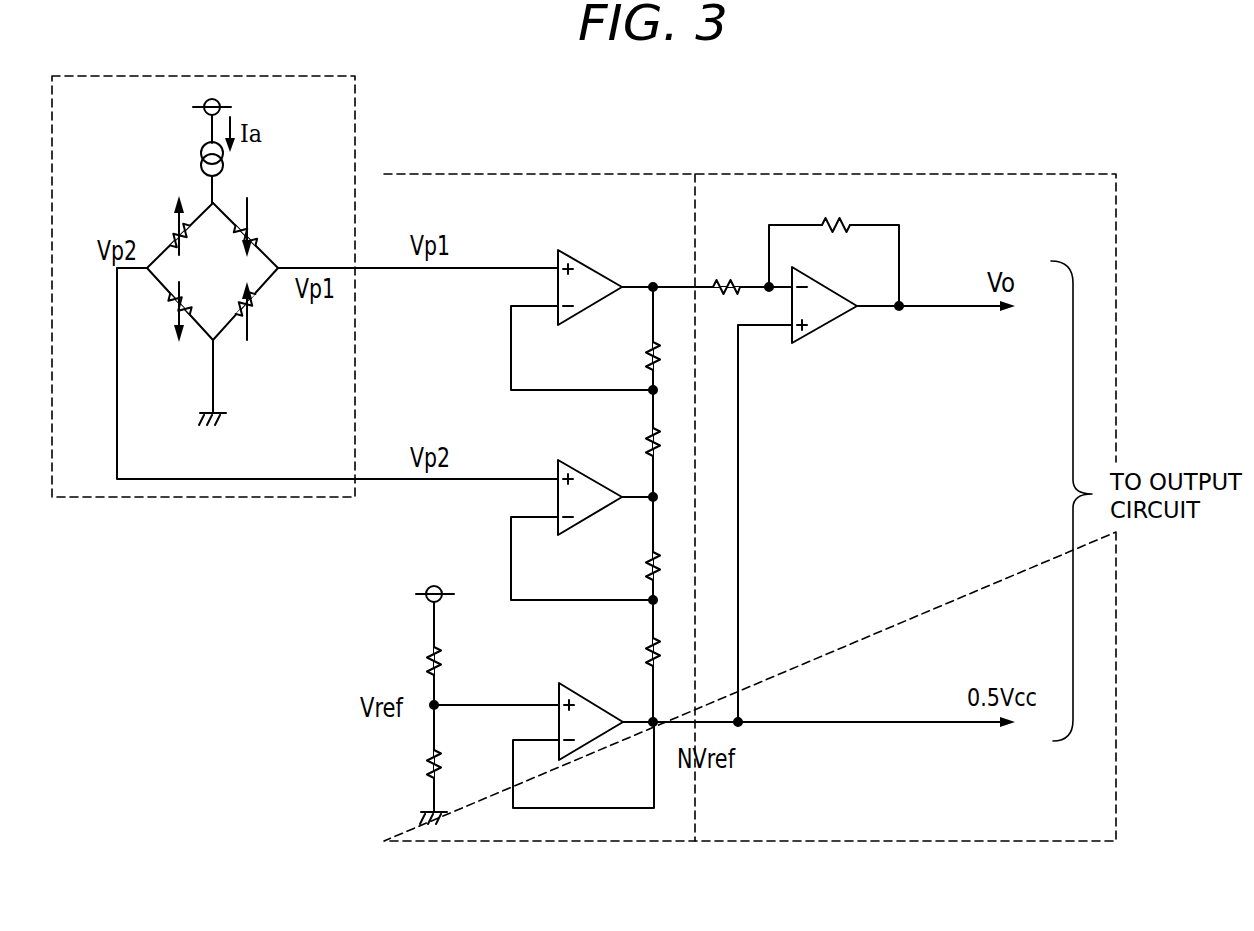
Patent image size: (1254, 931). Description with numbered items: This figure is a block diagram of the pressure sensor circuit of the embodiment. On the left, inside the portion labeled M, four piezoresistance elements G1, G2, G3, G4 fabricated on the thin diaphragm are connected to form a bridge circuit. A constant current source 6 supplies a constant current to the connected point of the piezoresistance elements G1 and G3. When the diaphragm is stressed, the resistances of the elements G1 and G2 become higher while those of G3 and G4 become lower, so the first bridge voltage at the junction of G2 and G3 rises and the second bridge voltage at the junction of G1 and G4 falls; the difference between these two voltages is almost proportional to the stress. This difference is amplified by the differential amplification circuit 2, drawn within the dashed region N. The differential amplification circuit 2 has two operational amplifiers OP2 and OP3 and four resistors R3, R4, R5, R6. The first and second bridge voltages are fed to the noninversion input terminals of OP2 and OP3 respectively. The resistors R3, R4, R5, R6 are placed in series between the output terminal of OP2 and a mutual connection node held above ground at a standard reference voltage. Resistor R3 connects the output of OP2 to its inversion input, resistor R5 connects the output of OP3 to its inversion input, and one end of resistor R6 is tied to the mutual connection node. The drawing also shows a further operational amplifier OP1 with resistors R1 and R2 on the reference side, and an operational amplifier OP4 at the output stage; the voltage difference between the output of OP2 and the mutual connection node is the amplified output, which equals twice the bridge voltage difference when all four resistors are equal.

The differential amplification circuit 2 is at (453, 841).
The constant current source 6 is at (205, 110).
The sensor bridge section M is at (172, 76).
The amplifier section N is at (761, 174).
The piezoresistance element G1 is at (168, 225).
The piezoresistance element G2 is at (258, 314).
The piezoresistance element G3 is at (258, 226).
The piezoresistance element G4 is at (168, 314).
The resistor R1 is at (453, 763).
The resistor R2 is at (453, 661).
The resistor R3 is at (634, 356).
The resistor R4 is at (634, 441).
The resistor R5 is at (634, 566).
The resistor R6 is at (635, 653).
The operational amplifier OP1 is at (764, 730).
The operational amplifier OP2 is at (651, 303).
The operational amplifier OP3 is at (582, 513).
The operational amplifier OP4 is at (864, 470).